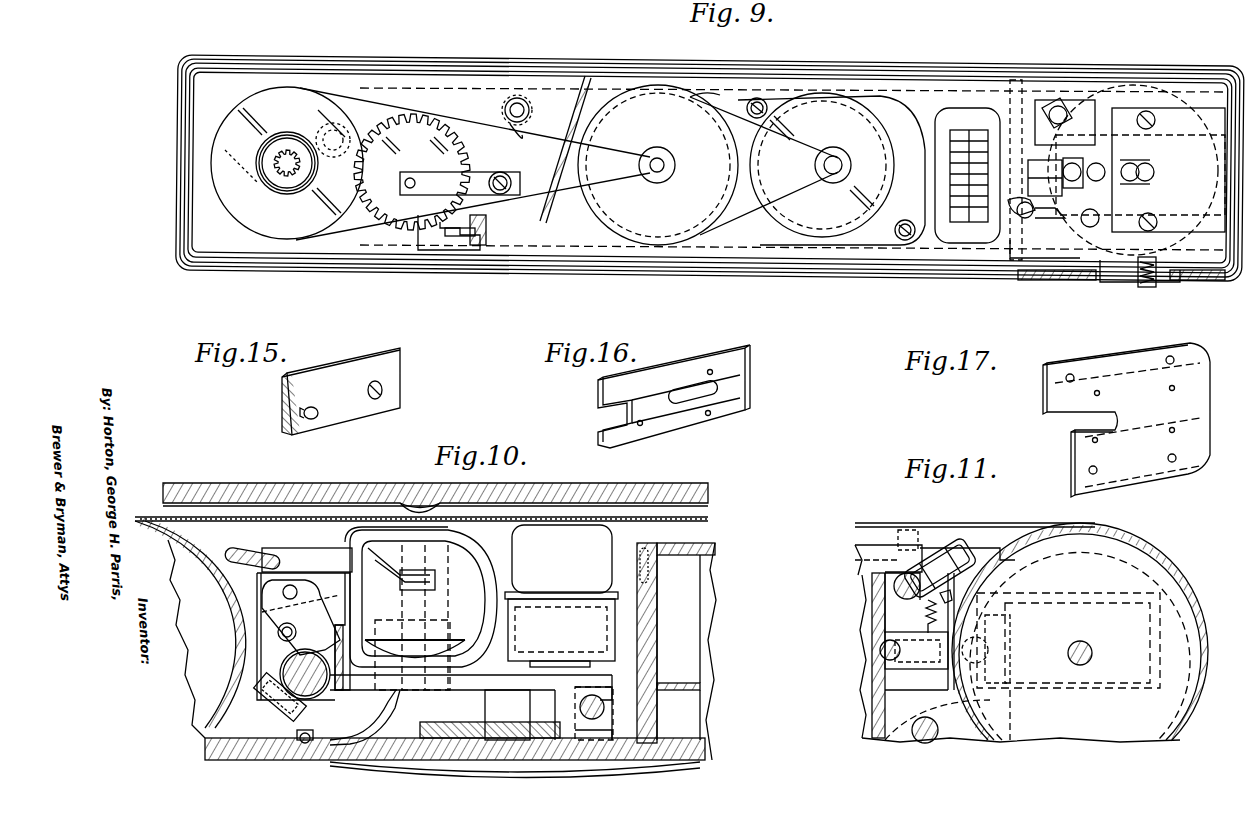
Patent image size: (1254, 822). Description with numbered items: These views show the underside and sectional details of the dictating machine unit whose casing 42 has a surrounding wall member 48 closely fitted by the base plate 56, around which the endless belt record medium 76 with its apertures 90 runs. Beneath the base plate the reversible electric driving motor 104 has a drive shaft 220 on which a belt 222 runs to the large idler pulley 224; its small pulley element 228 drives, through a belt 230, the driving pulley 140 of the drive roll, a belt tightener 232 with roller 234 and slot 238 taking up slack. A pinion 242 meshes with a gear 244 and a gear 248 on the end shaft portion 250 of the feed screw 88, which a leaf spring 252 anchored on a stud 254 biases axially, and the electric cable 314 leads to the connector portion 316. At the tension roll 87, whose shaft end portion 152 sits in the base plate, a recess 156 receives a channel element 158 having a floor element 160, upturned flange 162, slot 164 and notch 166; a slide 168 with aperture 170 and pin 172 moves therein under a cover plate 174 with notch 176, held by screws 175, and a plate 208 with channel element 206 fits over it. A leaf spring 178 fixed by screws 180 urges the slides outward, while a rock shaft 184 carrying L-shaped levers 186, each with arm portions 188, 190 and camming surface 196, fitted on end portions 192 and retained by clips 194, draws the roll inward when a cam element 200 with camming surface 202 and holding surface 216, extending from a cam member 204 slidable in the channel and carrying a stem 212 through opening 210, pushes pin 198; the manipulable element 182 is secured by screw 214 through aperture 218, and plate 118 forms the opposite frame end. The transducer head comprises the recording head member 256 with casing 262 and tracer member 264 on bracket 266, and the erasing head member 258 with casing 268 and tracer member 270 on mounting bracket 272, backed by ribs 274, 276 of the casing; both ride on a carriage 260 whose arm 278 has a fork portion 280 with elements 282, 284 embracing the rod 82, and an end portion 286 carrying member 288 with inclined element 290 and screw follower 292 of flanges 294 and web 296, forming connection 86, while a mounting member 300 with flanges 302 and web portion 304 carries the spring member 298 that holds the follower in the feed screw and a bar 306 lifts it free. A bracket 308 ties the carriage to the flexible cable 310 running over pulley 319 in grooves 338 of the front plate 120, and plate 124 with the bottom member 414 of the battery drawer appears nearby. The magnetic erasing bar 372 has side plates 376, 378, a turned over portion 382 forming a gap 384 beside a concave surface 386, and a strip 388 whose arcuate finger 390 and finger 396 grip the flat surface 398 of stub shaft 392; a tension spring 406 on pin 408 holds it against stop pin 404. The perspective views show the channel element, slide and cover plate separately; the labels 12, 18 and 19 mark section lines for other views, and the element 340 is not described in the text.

In FIG. 9, the housing frame 48 is at (180, 105).
In FIG. 9, the panel 56 is at (205, 228).
In FIG. 9, the reel disc 140 is at (252, 118).
In FIG. 9, the reel hub gear 242 is at (278, 180).
In FIG. 9, the pivot 244 is at (335, 122).
In FIG. 9, the gear 248 is at (452, 152).
In FIG. 9, the mounting bar 252 is at (460, 183).
In FIG. 9, the screw 254 is at (500, 194).
In FIG. 9, the hole 250 is at (410, 186).
In FIG. 9, the nut 232 is at (512, 98).
In FIG. 9, the washer 234 is at (529, 108).
In FIG. 9, the link 238 is at (515, 140).
In FIG. 9, the rod pivot 274 is at (483, 88).
In FIG. 10, the rod pivot 274 is at (418, 505).
In FIG. 9, the rod 276 is at (587, 70).
In FIG. 10, the rod 276 is at (561, 562).
In FIG. 9, the belt 314 is at (564, 163).
In FIG. 9, the disc 224 is at (655, 100).
In FIG. 9, the hub 228 is at (660, 158).
In FIG. 9, the disc face 230 is at (628, 185).
In FIG. 9, the mounting plate 104 is at (855, 98).
In FIG. 9, the disc 222 is at (800, 148).
In FIG. 9, the hub 220 is at (836, 175).
In FIG. 9, the connector 192 is at (967, 175).
In FIG. 9, the lead 316 is at (945, 130).
In FIG. 9, the block 178 is at (1040, 162).
In FIG. 11, the block 178 is at (932, 668).
In FIG. 9, the wall 90 is at (1020, 80).
In FIG. 11, the wall 90 is at (872, 642).
In FIG. 9, the solenoid mount 372 is at (1052, 100).
In FIG. 11, the solenoid mount 372 is at (895, 575).
In FIG. 9, the plate 174 is at (1082, 100).
In FIG. 17, the plate 174 is at (1126, 420).
In FIG. 9, the lens 156 is at (1133, 170).
In FIG. 11, the lens 156 is at (1160, 685).
In FIG. 9, the cover plate 208 is at (1210, 108).
In FIG. 9, the screw 175 is at (1135, 117).
In FIG. 9, the section line 18 is at (1160, 88).
In FIG. 9, the pin 172 is at (1077, 164).
In FIG. 15, the pin 172 is at (302, 415).
In FIG. 11, the pin 172 is at (1010, 672).
In FIG. 9, the hole 190 is at (1111, 160).
In FIG. 11, the hole 190 is at (1010, 651).
In FIG. 9, the roller 196 is at (1131, 179).
In FIG. 11, the roller 196 is at (1012, 630).
In FIG. 9, the roller 198 is at (1151, 180).
In FIG. 9, the roller 202 is at (1104, 218).
In FIG. 9, the screw 216 is at (1157, 212).
In FIG. 9, the bracket 200 is at (1180, 223).
In FIG. 9, the latch 186 is at (1015, 215).
In FIG. 11, the latch 186 is at (1018, 715).
In FIG. 9, the pivot 194 is at (1022, 218).
In FIG. 9, the pin 184 is at (1040, 230).
In FIG. 11, the pin 184 is at (925, 745).
In FIG. 9, the arm 188 is at (1045, 220).
In FIG. 11, the arm 188 is at (872, 708).
In FIG. 9, the bracket 210 is at (1072, 260).
In FIG. 9, the base 204 is at (1058, 282).
In FIG. 9, the slot 218 is at (1100, 282).
In FIG. 9, the guide 214 is at (1128, 287).
In FIG. 9, the spring 212 is at (1148, 290).
In FIG. 9, the base plate 182 is at (1192, 284).
In FIG. 9, the edge 206 is at (1230, 266).
In FIG. 9, the strap 310 is at (448, 250).
In FIG. 10, the strap 310 is at (345, 764).
In FIG. 9, the clip 319 is at (478, 250).
In FIG. 9, the lens 76 is at (568, 250).
In FIG. 10, the lens 76 is at (240, 520).
In FIG. 11, the lens 76 is at (1138, 560).
In FIG. 15, the plate 168 is at (333, 366).
In FIG. 11, the plate 168 is at (1130, 690).
In FIG. 15, the hole 170 is at (382, 390).
In FIG. 16, the channel bracket 158 is at (730, 356).
In FIG. 11, the channel bracket 158 is at (1125, 690).
In FIG. 16, the slot 164 is at (718, 392).
In FIG. 16, the notch 166 is at (612, 422).
In FIG. 16, the flange 162 is at (747, 408).
In FIG. 16, the web 160 is at (680, 415).
In FIG. 17, the slot 176 is at (1070, 426).
In FIG. 10, the top wall 42 is at (682, 478).
In FIG. 10, the groove 270 is at (590, 522).
In FIG. 10, the section line 12 is at (368, 463).
In FIG. 10, the sheet 256 is at (475, 527).
In FIG. 10, the bottom wall 120 is at (690, 750).
In FIG. 10, the side wall 124 is at (710, 548).
In FIG. 10, the slot 268 is at (600, 575).
In FIG. 10, the partition 414 is at (690, 685).
In FIG. 10, the housing 258 is at (415, 560).
In FIG. 10, the bracket 264 is at (401, 568).
In FIG. 10, the arm 304 is at (360, 612).
In FIG. 10, the lever 298 is at (365, 640).
In FIG. 10, the wall 262 is at (490, 585).
In FIG. 10, the motor 272 is at (561, 633).
In FIG. 10, the mount 266 is at (485, 655).
In FIG. 10, the shelf 282 is at (615, 675).
In FIG. 10, the block 280 is at (612, 698).
In FIG. 10, the shaft 82 is at (605, 710).
In FIG. 10, the bracket 278 is at (503, 690).
In FIG. 10, the base 260 is at (520, 695).
In FIG. 10, the pad 306 is at (240, 550).
In FIG. 10, the block 286 is at (300, 560).
In FIG. 10, the housing 302 is at (275, 612).
In FIG. 10, the plate 300 is at (265, 592).
In FIG. 10, the pivot 288 is at (278, 632).
In FIG. 10, the arm 290 is at (270, 652).
In FIG. 10, the shaft 88 is at (283, 673).
In FIG. 10, the latch 294 is at (290, 702).
In FIG. 10, the lever 292 is at (260, 695).
In FIG. 10, the arrow 86 is at (268, 712).
In FIG. 10, the pin 296 is at (300, 720).
In FIG. 10, the screw 338 is at (316, 729).
In FIG. 10, the spring arm 308 is at (385, 702).
In FIG. 10, the strap 340 is at (530, 770).
In FIG. 10, the foot 284 is at (600, 740).
In FIG. 11, the lens rim 87 is at (1180, 590).
In FIG. 11, the lens 118 is at (1120, 548).
In FIG. 11, the frame 388 is at (975, 549).
In FIG. 11, the plate 382 is at (970, 546).
In FIG. 11, the section line 19 is at (912, 556).
In FIG. 11, the solenoid 376 is at (940, 552).
In FIG. 11, the plunger 384 is at (962, 552).
In FIG. 11, the bracket 386 is at (975, 568).
In FIG. 11, the coil 378 is at (970, 580).
In FIG. 11, the pin 392 is at (892, 585).
In FIG. 11, the arrow 398 is at (890, 567).
In FIG. 11, the bracket 390 is at (895, 598).
In FIG. 11, the spring 396 is at (920, 600).
In FIG. 11, the link 404 is at (950, 600).
In FIG. 11, the pin 406 is at (958, 630).
In FIG. 11, the wall 180 is at (872, 672).
In FIG. 11, the block 408 is at (917, 651).
In FIG. 11, the shaft 152 is at (1085, 645).